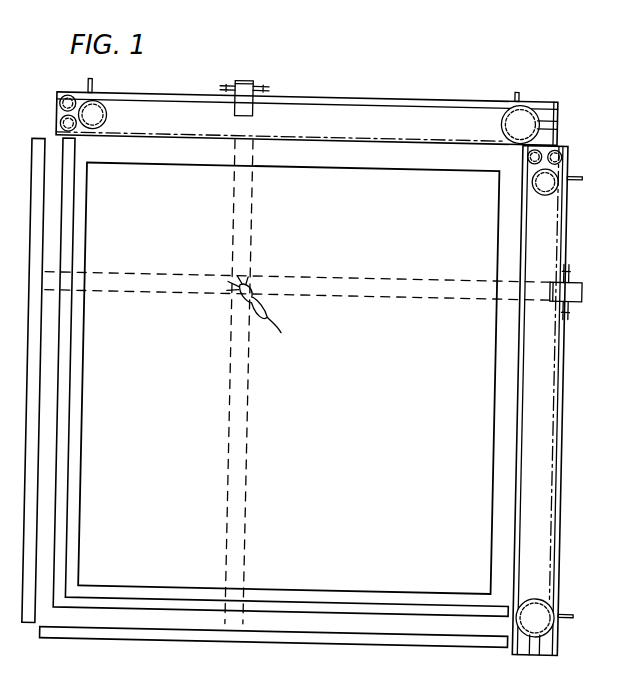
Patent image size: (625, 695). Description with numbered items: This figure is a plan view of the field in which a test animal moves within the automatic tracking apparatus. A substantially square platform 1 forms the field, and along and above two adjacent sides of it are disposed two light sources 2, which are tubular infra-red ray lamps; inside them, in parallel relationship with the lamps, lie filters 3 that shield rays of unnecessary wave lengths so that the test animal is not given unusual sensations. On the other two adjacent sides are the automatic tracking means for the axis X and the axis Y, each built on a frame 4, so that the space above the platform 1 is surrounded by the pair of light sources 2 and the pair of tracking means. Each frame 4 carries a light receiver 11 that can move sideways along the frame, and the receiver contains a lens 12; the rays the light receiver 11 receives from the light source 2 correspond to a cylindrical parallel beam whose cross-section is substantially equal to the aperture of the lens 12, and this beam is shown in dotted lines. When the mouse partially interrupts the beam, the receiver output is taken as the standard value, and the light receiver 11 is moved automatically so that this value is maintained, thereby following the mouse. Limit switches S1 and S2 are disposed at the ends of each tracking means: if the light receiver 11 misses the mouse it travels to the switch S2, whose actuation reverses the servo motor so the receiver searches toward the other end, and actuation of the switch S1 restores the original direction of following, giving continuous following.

The platform 1 is at (510, 400).
The light sources 2 is at (33, 261).
The filters 3 is at (62, 220).
The frame 4 is at (421, 110).
The light receiver 11 is at (246, 90).
The lens 12 is at (232, 116).
The X axis X is at (369, 111).
The Y axis Y is at (544, 442).
The limit switch S1 is at (87, 89).
The limit switch S2 is at (511, 90).